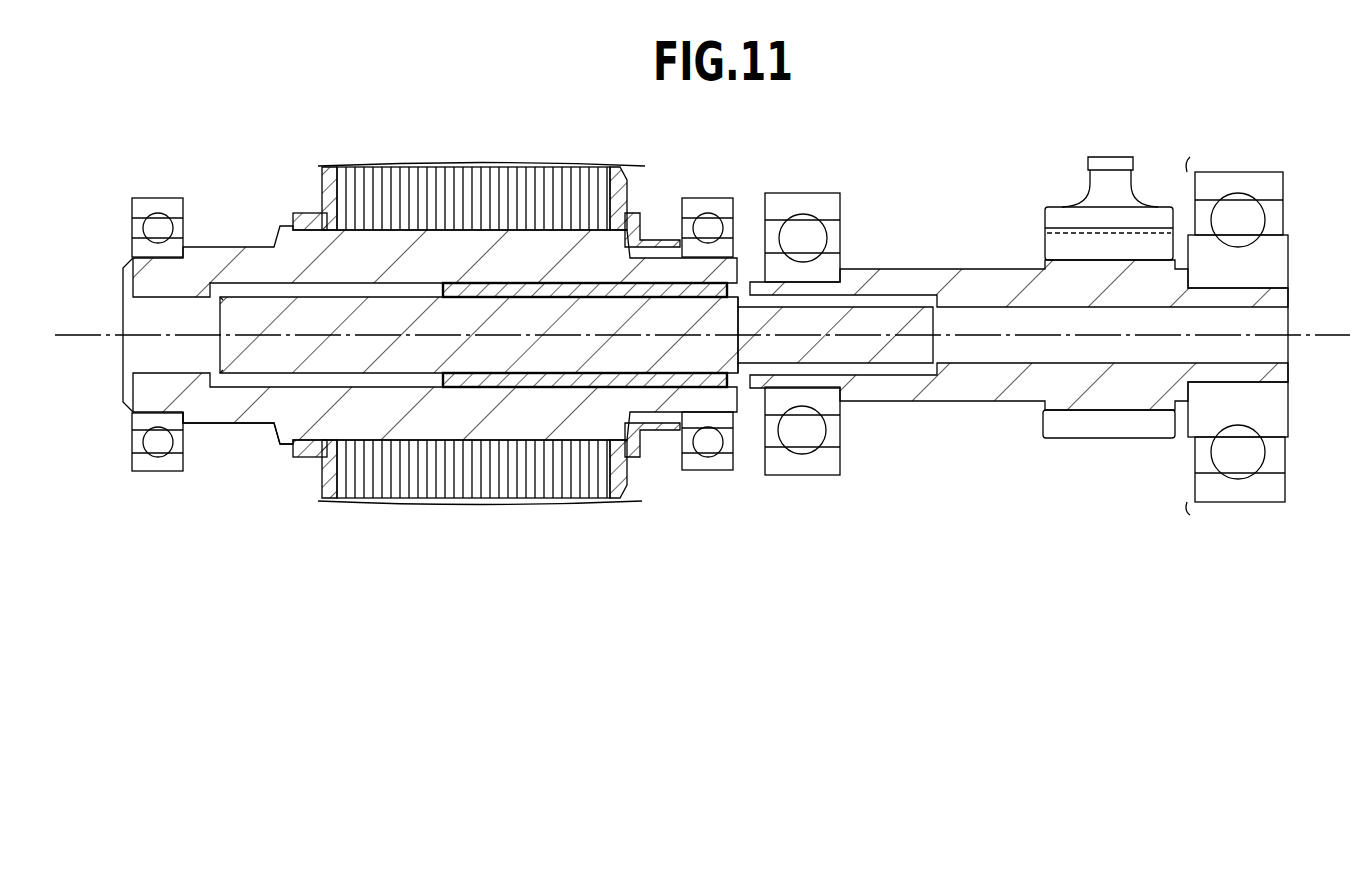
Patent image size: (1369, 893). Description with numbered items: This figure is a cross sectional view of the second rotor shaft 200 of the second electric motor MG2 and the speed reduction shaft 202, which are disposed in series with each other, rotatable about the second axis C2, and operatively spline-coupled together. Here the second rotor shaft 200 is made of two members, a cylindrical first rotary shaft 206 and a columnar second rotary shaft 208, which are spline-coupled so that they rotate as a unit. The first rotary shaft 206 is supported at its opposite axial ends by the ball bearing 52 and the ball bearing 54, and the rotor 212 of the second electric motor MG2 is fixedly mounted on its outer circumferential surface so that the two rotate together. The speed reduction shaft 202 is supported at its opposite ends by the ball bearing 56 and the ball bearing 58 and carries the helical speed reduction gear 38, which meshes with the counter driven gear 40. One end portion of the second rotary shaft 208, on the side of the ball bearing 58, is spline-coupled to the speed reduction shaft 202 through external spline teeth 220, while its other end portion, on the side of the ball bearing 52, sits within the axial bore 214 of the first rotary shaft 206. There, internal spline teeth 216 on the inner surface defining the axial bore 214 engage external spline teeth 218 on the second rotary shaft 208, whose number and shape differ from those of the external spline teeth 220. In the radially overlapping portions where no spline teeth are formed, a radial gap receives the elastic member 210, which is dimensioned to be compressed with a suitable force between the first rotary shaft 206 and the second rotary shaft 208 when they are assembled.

The speed reduction gear 38 is at (1115, 425).
The counter driven gear 40 is at (1080, 211).
The ball bearing 52 is at (158, 228).
The ball bearing 54 is at (708, 228).
The ball bearing 56 is at (803, 238).
The ball bearing 58 is at (1238, 218).
The second rotor shaft 200 is at (240, 208).
The speed reduction shaft 202 is at (955, 252).
The first rotary shaft 206 is at (273, 454).
The second rotary shaft 208 is at (401, 384).
The elastic member 210 is at (577, 380).
The rotor 212 is at (586, 200).
The axial bore 214 is at (303, 300).
The internal spline teeth 216 is at (310, 382).
The external spline teeth 218 is at (358, 290).
The external spline teeth 220 is at (887, 368).
The second electric motor MG2 is at (499, 336).
The second axis C2 is at (1322, 343).